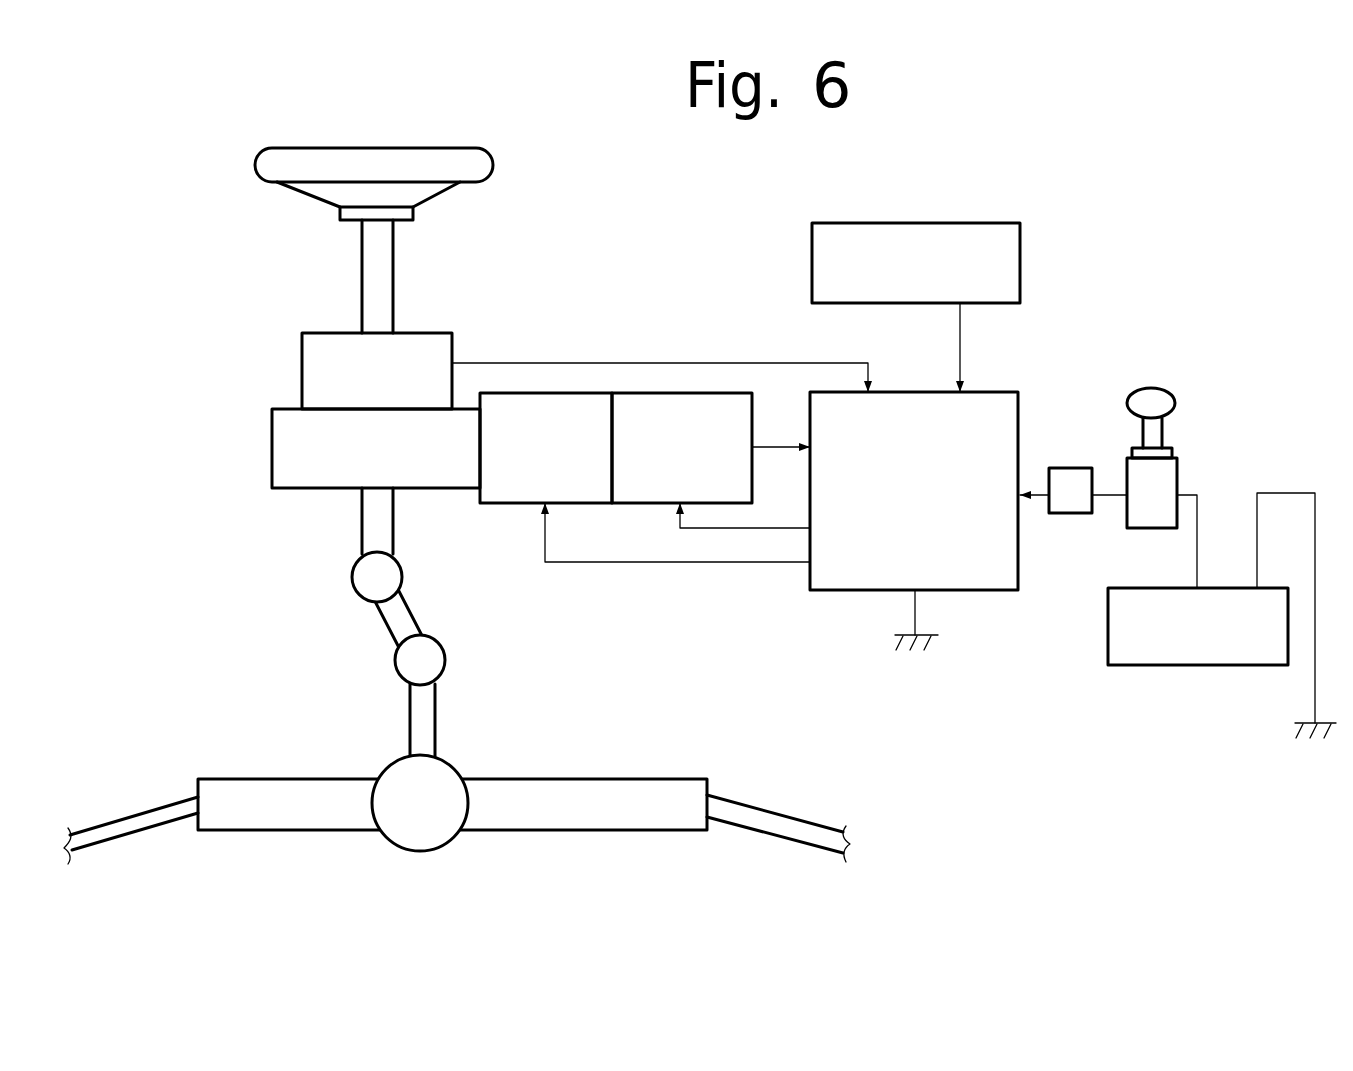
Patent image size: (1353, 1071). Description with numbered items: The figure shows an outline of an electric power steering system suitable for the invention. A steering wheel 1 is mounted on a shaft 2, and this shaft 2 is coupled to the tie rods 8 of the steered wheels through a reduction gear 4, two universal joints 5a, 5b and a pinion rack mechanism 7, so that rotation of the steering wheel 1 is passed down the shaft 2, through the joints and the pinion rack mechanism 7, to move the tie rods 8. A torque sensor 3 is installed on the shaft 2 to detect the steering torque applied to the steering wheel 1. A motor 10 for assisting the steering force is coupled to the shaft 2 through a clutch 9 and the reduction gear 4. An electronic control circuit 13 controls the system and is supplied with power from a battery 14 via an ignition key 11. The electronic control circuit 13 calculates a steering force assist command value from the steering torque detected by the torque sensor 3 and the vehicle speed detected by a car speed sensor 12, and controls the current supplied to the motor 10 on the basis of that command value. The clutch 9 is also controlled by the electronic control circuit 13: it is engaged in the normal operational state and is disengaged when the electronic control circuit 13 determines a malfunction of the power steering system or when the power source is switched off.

The steering wheel 1 is at (482, 162).
The shaft 2 is at (370, 260).
The torque sensor 3 is at (302, 358).
The reduction gear 4 is at (272, 442).
The universal joint 5a is at (360, 573).
The universal joint 5b is at (392, 672).
The pinion rack mechanism 7 is at (463, 763).
The tie rods 8 is at (770, 815).
The clutch 9 is at (538, 393).
The motor 10 is at (675, 393).
The ignition key 11 is at (1145, 387).
The car speed sensor 12 is at (973, 223).
The electronic control circuit 13 is at (988, 392).
The battery 14 is at (1228, 658).